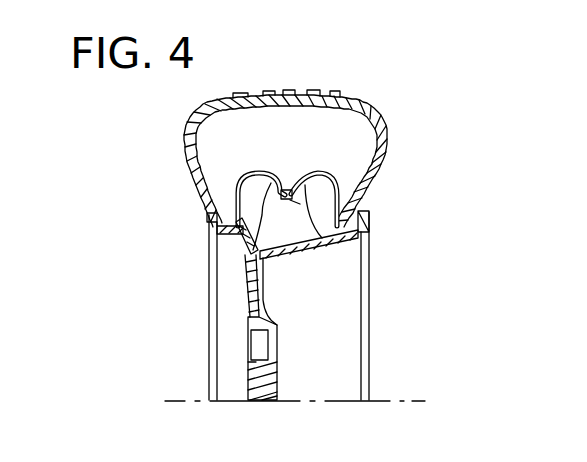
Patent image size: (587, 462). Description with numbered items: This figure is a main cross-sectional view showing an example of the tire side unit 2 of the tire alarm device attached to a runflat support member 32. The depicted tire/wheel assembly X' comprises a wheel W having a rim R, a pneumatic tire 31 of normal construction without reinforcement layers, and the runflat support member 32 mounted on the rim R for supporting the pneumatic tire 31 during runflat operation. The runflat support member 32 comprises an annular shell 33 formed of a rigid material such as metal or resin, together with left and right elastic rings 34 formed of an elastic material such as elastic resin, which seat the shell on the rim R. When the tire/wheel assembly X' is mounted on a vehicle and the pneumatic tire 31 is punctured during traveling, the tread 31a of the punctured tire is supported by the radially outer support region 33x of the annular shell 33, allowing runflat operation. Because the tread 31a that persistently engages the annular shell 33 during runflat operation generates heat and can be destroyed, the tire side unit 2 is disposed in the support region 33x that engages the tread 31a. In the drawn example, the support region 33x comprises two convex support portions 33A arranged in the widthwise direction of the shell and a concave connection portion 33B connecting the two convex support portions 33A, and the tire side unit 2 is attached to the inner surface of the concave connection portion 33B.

The tire side unit 2 is at (296, 246).
The rim R is at (315, 243).
The wheel W is at (373, 332).
The pneumatic tire 31 is at (362, 96).
The tread 31a is at (287, 93).
The runflat support member 32 is at (325, 178).
The annular shell 33 is at (250, 172).
The convex support portions 33A is at (286, 189).
The concave connection portion 33B is at (284, 216).
The support region 33x is at (368, 198).
The elastic rings 34 is at (208, 222).
The tire/wheel assembly X' is at (411, 242).